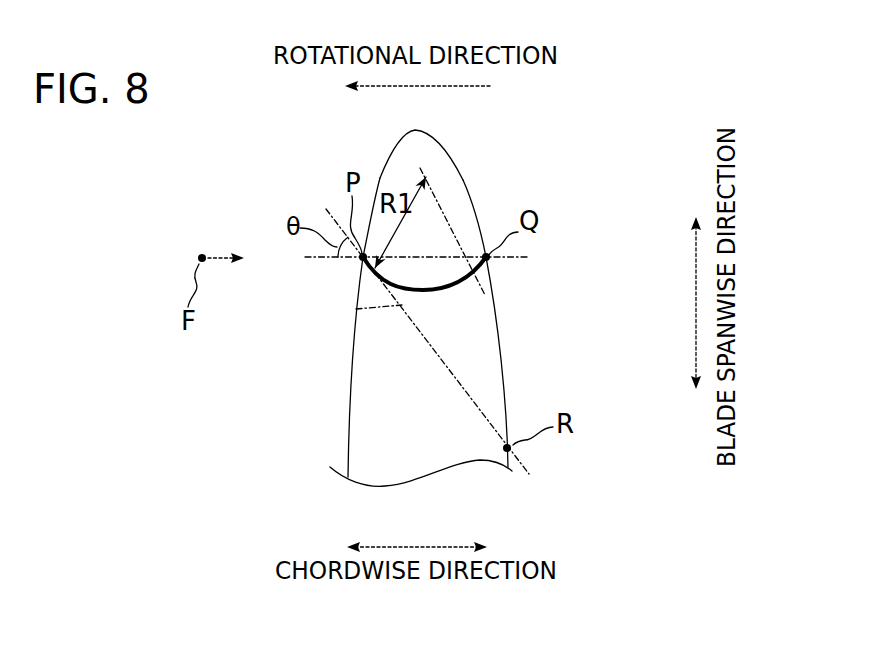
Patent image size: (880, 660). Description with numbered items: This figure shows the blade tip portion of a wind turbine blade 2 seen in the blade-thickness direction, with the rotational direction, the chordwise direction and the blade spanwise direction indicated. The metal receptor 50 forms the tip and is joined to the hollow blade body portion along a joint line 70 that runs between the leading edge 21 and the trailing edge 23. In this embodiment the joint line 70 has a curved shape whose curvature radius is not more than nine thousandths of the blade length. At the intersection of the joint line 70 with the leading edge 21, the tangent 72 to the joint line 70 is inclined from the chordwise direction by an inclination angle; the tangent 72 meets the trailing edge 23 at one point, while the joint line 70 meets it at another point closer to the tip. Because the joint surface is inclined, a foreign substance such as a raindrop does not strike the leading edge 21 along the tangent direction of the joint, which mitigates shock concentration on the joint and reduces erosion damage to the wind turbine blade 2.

The wind turbine blade 2 is at (590, 90).
The leading edge 21 is at (348, 376).
The trailing edge 23 is at (507, 377).
The metal receptor 50 is at (449, 165).
The joint line 70 is at (467, 283).
The tangent 72 is at (357, 310).